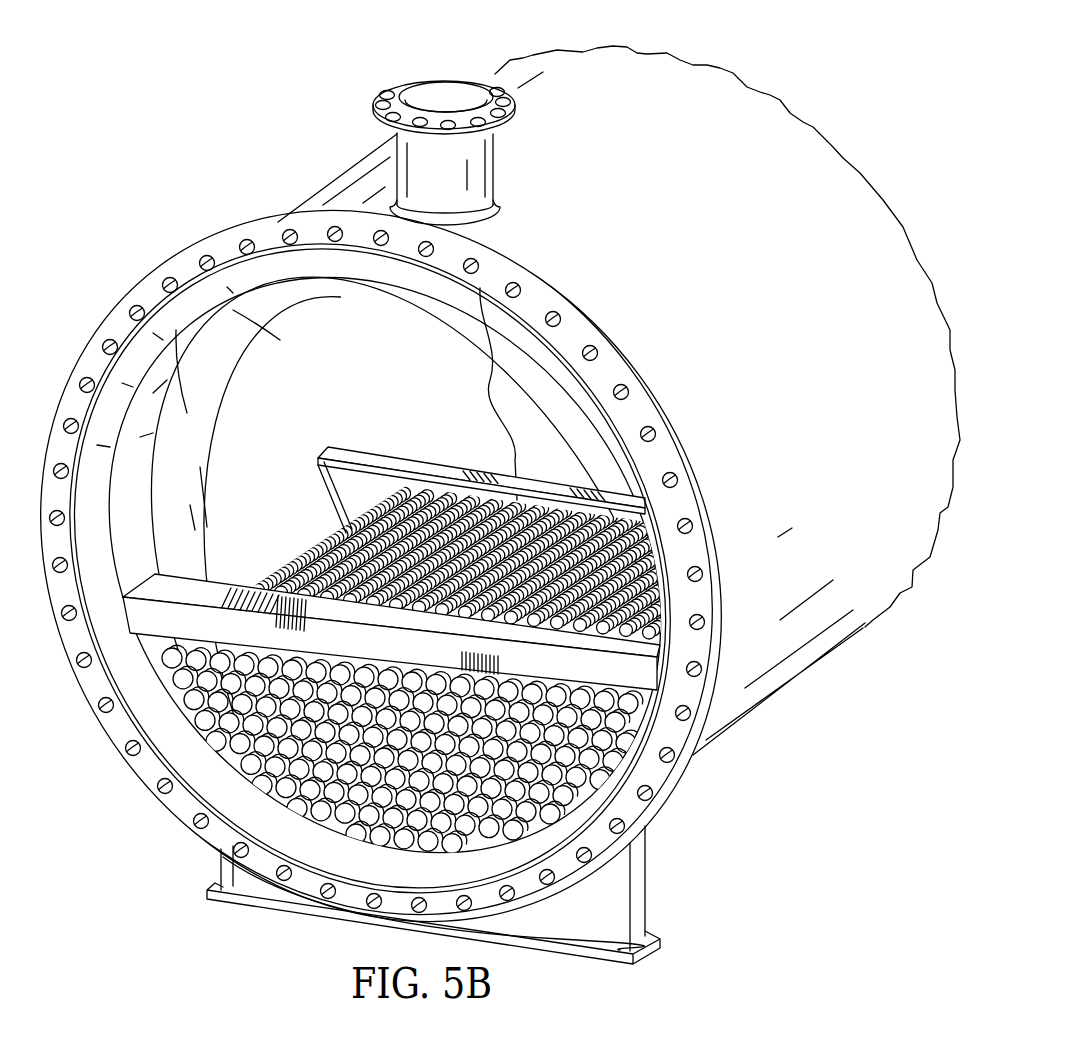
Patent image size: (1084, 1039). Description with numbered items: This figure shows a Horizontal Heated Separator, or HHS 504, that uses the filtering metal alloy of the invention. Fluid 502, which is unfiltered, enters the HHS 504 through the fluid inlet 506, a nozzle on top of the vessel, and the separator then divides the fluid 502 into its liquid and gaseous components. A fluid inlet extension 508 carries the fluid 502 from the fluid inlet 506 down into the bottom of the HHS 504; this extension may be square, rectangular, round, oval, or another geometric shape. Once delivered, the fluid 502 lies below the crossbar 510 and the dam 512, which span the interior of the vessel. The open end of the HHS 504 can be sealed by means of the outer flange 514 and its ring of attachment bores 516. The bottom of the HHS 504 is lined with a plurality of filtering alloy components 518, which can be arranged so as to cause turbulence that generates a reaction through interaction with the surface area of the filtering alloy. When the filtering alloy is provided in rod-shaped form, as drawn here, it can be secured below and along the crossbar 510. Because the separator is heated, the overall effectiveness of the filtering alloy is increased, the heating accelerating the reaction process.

The fluid 502 is at (414, 66).
The Horizontal Heated Separator (HHS) 504 is at (766, 354).
The fluid inlet 506 is at (493, 170).
The fluid inlet extension 508 is at (218, 425).
The crossbar 510 is at (245, 588).
The dam 512 is at (441, 456).
The outer flange 514 is at (530, 300).
The attachment bores 516 is at (130, 308).
The filtering alloy components 518 is at (518, 498).